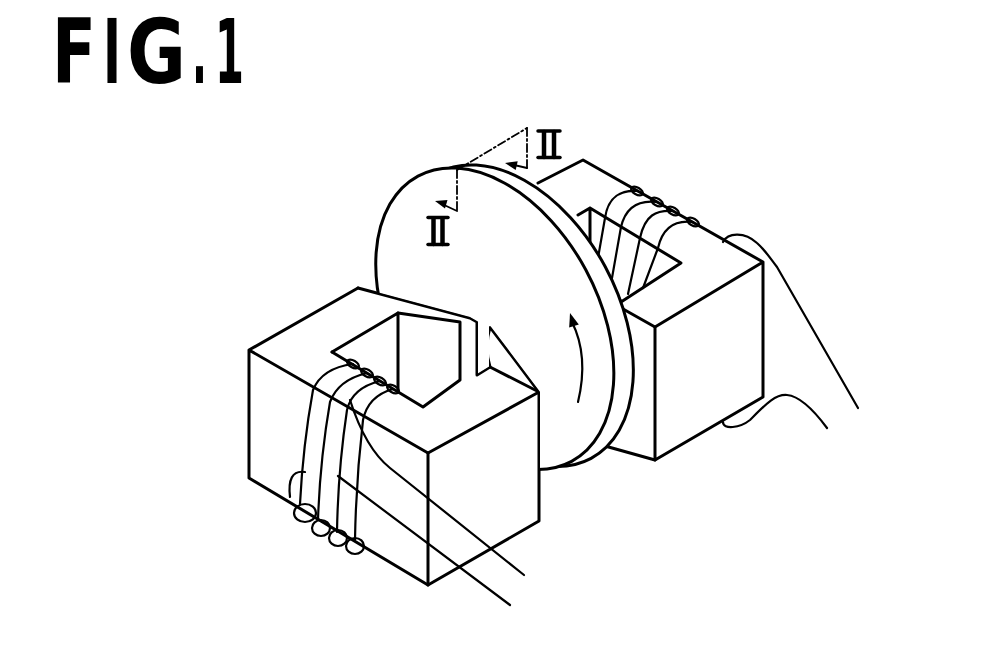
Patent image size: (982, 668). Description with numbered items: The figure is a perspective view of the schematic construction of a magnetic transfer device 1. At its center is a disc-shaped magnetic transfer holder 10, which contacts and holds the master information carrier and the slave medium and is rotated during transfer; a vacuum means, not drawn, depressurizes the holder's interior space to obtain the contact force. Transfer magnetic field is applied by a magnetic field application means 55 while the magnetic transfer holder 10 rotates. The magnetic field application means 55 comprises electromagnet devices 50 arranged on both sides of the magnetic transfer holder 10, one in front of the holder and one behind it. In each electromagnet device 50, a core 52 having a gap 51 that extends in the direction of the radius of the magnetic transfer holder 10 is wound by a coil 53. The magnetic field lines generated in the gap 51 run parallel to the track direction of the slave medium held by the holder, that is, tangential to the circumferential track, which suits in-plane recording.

The magnetic transfer device 1 is at (251, 202).
The magnetic transfer holder 10 is at (380, 189).
The electromagnet device 50 is at (514, 378).
The gap 51 is at (487, 335).
The core 52 is at (262, 428).
The coil 53 is at (695, 222).
The magnetic field application means 55 is at (683, 197).